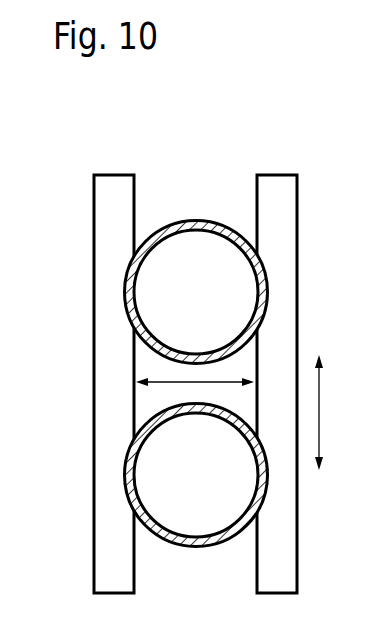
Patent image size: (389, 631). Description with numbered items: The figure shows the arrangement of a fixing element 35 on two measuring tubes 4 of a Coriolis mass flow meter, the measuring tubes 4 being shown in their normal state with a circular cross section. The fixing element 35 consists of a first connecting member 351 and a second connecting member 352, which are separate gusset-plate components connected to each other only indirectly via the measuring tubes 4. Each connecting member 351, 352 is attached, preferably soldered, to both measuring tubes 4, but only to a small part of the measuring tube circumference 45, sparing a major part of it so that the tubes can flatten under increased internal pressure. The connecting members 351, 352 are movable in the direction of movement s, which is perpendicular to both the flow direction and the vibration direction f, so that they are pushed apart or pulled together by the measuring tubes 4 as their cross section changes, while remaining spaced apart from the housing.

The fixing element 35 is at (209, 321).
The first connecting member 351 is at (110, 188).
The second connecting member 352 is at (287, 352).
The measuring tube 4 is at (195, 367).
The measuring tube circumference 45 is at (270, 270).
The direction of movement s is at (232, 378).
The vibration direction f is at (321, 393).